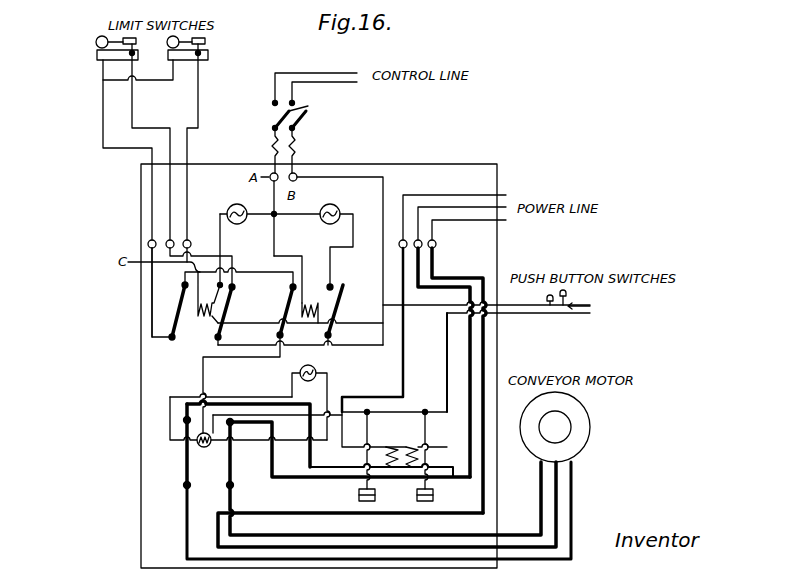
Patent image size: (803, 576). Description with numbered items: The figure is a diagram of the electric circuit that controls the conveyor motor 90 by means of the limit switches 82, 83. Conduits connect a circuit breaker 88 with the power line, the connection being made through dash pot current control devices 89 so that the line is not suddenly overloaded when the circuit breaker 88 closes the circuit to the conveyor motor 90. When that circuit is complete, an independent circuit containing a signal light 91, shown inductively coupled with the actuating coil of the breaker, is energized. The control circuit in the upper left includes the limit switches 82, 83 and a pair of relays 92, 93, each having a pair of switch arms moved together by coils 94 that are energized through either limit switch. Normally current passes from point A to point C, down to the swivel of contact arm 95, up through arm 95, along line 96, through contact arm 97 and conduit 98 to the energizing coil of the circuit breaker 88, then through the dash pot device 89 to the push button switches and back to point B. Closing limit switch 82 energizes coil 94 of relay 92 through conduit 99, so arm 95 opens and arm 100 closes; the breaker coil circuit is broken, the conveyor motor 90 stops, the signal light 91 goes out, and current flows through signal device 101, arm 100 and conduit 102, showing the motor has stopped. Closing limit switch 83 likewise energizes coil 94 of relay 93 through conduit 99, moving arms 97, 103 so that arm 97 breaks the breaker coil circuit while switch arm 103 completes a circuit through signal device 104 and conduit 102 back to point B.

The limit switch 82 is at (96, 43).
The limit switch 83 is at (208, 52).
The circuit breaker 88 is at (185, 456).
The dash pot current control device 89 is at (400, 446).
The conveyor motor 90 is at (591, 430).
The signal light 91 is at (315, 367).
The relay 92 is at (179, 294).
The relay 93 is at (266, 335).
The coil 94 is at (207, 303).
The contact arm 95 is at (180, 304).
The line 96 is at (243, 306).
The contact arm 97 is at (288, 303).
The conduit 98 is at (204, 379).
The conduit 99 is at (354, 321).
The arm 100 is at (229, 311).
The signal device 101 is at (235, 196).
The conduit 102 is at (378, 346).
The switch arm 103 is at (345, 287).
The signal device 104 is at (330, 205).